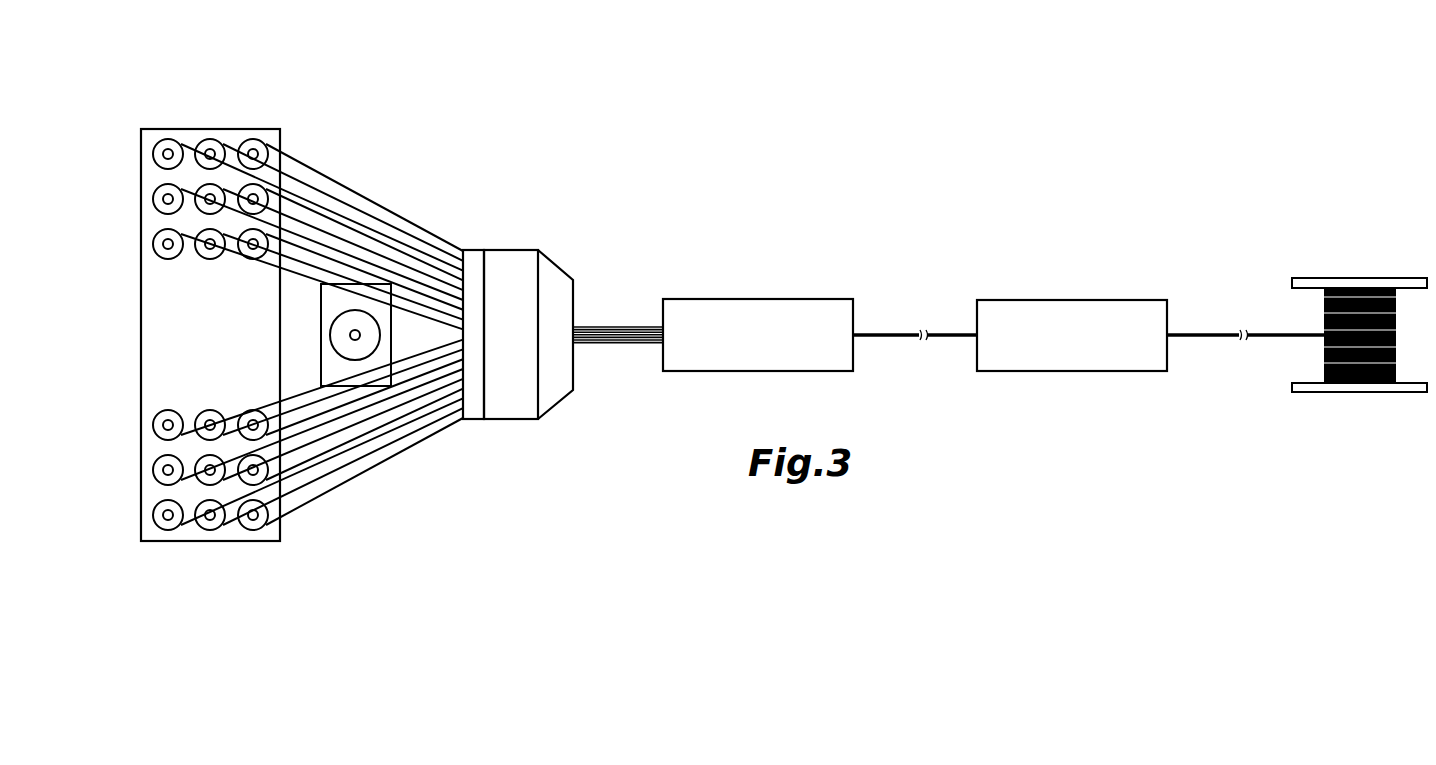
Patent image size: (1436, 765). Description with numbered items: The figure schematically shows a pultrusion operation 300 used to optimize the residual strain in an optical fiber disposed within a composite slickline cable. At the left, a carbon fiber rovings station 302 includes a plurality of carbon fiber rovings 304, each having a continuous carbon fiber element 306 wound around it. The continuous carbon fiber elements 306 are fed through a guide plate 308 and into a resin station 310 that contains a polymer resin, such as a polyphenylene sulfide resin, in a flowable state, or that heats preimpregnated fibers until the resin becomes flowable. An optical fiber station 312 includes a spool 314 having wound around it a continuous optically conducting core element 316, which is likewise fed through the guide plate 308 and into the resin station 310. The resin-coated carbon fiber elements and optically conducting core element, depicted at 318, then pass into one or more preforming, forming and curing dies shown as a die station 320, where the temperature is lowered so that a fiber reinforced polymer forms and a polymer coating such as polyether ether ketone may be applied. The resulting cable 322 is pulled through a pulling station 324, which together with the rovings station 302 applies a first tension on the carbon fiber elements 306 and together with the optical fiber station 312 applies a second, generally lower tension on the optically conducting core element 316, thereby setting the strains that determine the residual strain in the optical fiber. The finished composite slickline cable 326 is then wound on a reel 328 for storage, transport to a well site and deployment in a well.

The pultrusion operation 300 is at (1133, 168).
The carbon fiber rovings station 302 is at (151, 129).
The carbon fiber rovings 304 is at (210, 140).
The continuous carbon fiber element 306 is at (304, 179).
The guide plate 308 is at (474, 254).
The resin station 310 is at (517, 254).
The optical fiber station 312 is at (331, 294).
The spool 314 is at (358, 309).
The continuous optically conducting core element 316 is at (412, 346).
The polymer resin coated continuous carbon fiber elements and continuous optically c 318 is at (620, 326).
The die station 320 is at (763, 305).
The resulting cable 322 is at (883, 331).
The pulling station 324 is at (1079, 305).
The composite slickline cable 326 is at (1193, 331).
The reel 328 is at (1359, 277).